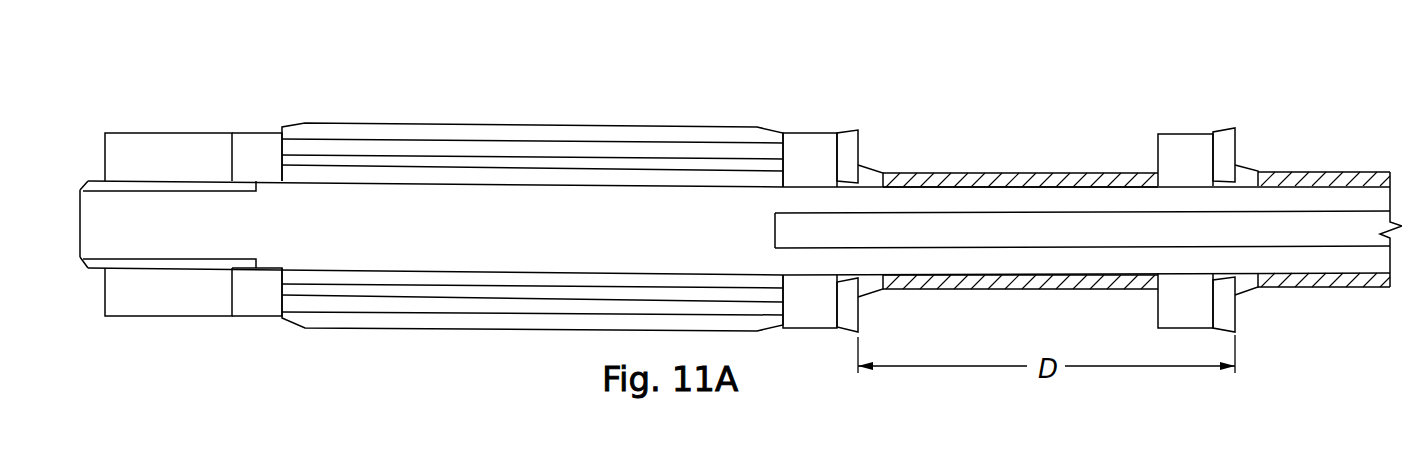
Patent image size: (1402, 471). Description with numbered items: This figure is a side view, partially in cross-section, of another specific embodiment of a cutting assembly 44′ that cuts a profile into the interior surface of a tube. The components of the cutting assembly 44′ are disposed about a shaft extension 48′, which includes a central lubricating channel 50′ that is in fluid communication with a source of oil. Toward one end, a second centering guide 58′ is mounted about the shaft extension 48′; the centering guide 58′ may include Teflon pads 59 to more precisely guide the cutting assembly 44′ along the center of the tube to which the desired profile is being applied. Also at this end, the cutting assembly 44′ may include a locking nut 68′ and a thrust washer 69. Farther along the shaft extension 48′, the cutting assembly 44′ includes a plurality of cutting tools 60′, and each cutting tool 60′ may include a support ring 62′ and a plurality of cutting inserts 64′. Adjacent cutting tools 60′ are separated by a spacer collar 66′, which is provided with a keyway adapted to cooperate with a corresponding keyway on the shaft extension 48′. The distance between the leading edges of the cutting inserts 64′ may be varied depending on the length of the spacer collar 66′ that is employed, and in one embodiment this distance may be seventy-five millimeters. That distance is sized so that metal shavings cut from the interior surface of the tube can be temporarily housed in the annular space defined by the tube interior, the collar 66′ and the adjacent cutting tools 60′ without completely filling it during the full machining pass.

The cutting assembly 44′ is at (757, 92).
The shaft extension 48′ is at (995, 203).
The central lubricating channel 50′ is at (1120, 225).
The second centering guide 58′ is at (532, 197).
The Teflon pads 59 is at (470, 148).
The cutting tool 60′ is at (1043, 190).
The support ring 62′ is at (822, 147).
The cutting inserts 64′ is at (852, 148).
The spacer collar 66′ is at (1055, 173).
The locking nut 68′ is at (135, 150).
The thrust washer 69 is at (260, 152).